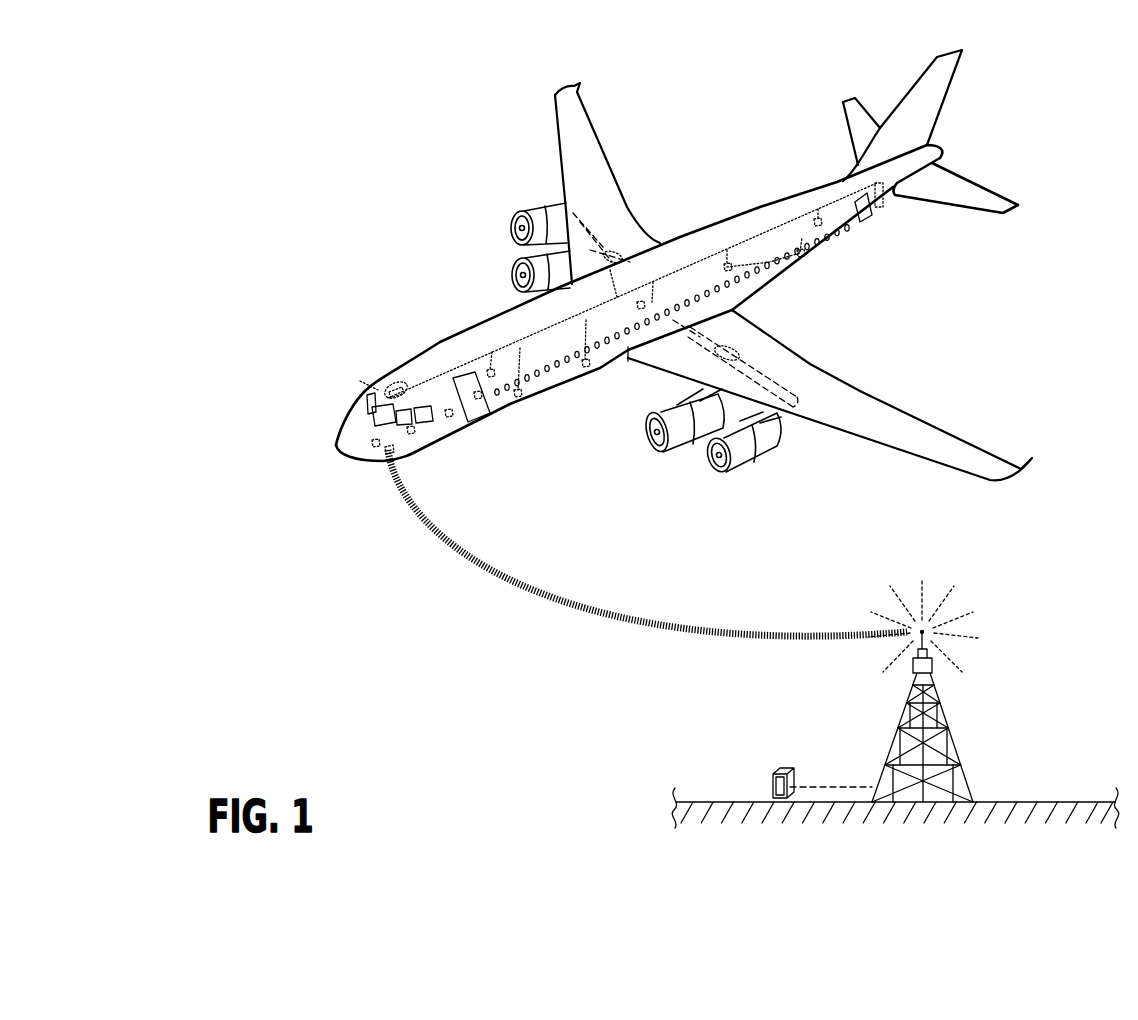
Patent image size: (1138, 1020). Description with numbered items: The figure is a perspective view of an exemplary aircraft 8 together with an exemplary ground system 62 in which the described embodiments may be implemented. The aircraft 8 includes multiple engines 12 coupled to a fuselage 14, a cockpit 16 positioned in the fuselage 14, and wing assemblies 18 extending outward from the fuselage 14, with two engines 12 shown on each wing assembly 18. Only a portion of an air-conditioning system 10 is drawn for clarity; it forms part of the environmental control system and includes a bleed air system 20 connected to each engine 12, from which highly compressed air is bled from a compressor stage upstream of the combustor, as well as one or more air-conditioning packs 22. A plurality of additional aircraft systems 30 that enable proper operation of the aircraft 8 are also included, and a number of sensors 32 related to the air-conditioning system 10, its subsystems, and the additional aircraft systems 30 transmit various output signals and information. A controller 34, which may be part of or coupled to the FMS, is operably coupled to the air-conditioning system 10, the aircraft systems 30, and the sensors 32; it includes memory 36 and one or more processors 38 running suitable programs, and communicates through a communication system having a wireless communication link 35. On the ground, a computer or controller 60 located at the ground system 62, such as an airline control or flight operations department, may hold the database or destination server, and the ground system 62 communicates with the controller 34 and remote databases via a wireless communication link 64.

The aircraft 8 is at (357, 347).
The air-conditioning system 10 is at (753, 340).
The engines 12 is at (533, 213).
The fuselage 14 is at (738, 207).
The cockpit 16 is at (470, 338).
The wing assemblies 18 is at (570, 117).
The bleed air system 20 is at (760, 362).
The air-conditioning packs 22 is at (620, 243).
The additional aircraft systems 30 is at (375, 447).
The sensors 32 is at (546, 198).
The controller 34 is at (420, 400).
The wireless communication link 35 is at (385, 455).
The memory 36 is at (407, 383).
The processors 38 is at (377, 392).
The computer or controller 60 is at (772, 770).
The ground system 62 is at (950, 718).
The wireless communication link 64 is at (917, 630).